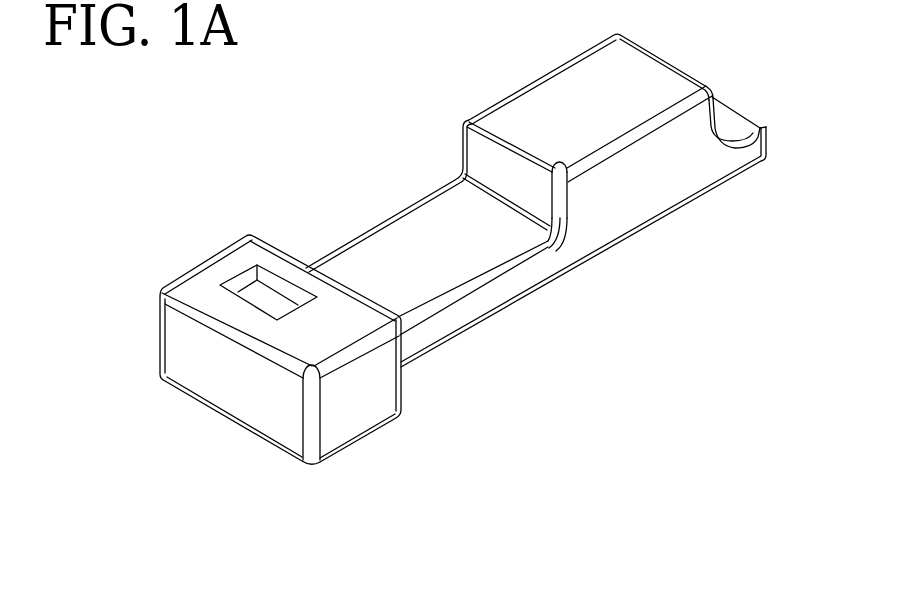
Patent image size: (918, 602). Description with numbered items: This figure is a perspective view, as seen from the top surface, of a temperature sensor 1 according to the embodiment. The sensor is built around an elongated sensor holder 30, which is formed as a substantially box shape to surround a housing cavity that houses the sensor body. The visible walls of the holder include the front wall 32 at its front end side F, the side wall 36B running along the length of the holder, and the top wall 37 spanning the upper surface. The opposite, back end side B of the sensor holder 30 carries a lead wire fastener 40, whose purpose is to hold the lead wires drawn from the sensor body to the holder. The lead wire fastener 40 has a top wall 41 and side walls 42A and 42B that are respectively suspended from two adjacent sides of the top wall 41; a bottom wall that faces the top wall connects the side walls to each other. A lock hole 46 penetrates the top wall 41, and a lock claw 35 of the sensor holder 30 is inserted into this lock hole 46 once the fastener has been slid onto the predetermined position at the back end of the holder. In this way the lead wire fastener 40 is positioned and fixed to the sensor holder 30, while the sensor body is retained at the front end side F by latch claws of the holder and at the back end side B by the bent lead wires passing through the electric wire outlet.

The temperature sensor 1 is at (326, 110).
The sensor holder 30 is at (388, 210).
The front wall 32 is at (738, 100).
The lock claw 35 is at (270, 290).
The side wall 36B is at (598, 238).
The top wall 37 is at (430, 220).
The lead wire fastener 40 is at (198, 256).
The top wall 41 is at (196, 280).
The lock hole 46 is at (235, 287).
The side wall 42A is at (353, 422).
The side wall 42B is at (273, 418).
The back end side B is at (229, 422).
The front end side F is at (626, 139).